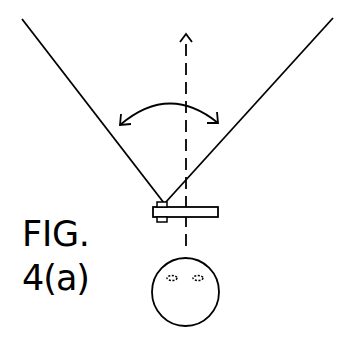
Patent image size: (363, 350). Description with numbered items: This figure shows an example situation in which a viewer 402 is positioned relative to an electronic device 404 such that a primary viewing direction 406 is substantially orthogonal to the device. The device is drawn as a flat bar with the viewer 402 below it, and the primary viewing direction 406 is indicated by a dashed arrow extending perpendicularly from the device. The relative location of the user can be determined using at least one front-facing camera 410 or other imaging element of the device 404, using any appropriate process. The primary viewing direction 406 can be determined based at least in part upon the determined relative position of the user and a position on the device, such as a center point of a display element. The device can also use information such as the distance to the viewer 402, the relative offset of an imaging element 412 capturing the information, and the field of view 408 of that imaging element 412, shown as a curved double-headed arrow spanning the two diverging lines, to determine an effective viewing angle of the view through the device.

The viewer 402 is at (219, 297).
The electronic device 404 is at (218, 212).
The primary viewing direction 406 is at (184, 131).
The field of view 408 is at (169, 105).
The front-facing camera 410 is at (158, 221).
The imaging element 412 is at (158, 203).